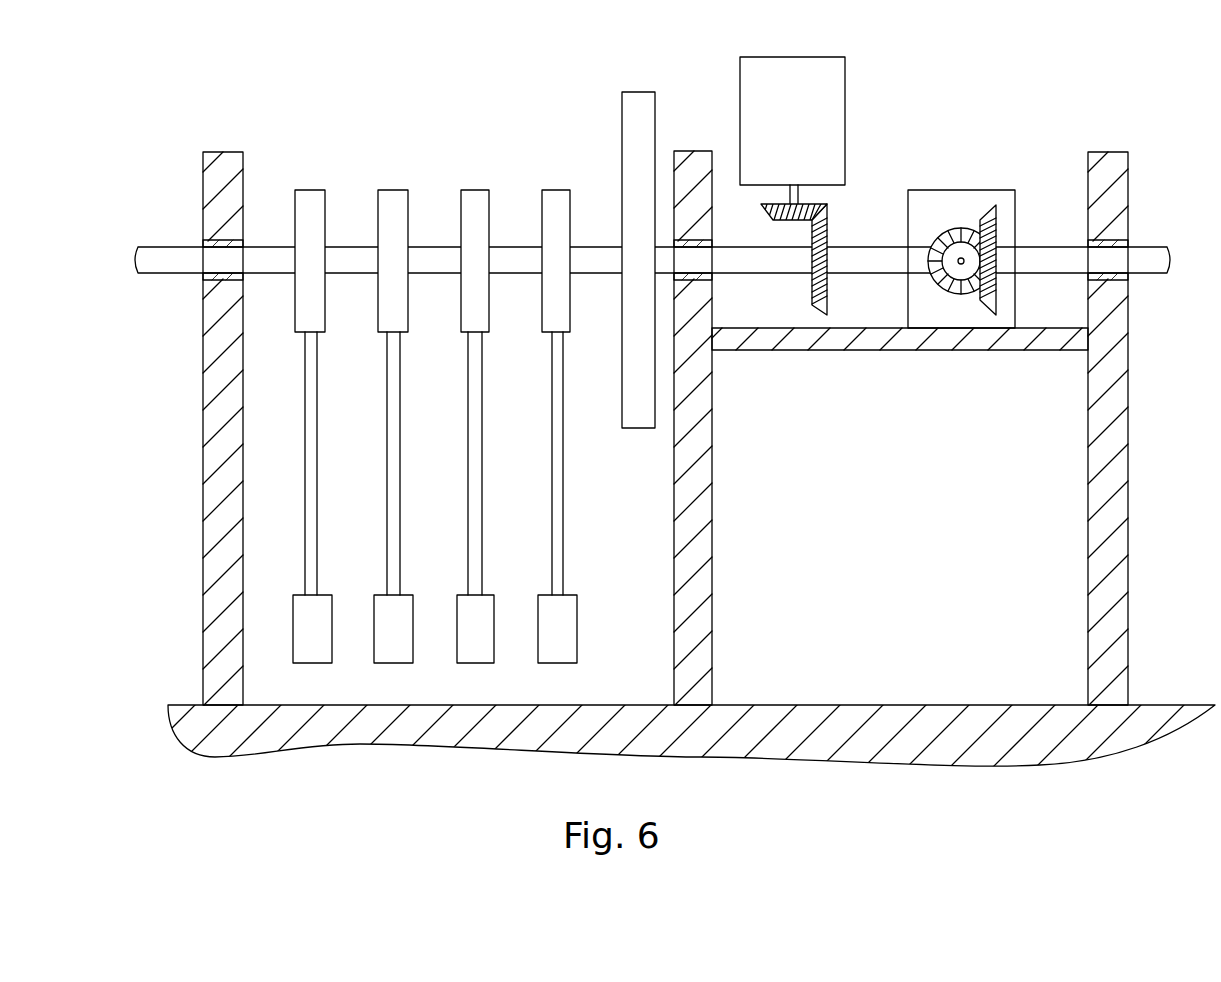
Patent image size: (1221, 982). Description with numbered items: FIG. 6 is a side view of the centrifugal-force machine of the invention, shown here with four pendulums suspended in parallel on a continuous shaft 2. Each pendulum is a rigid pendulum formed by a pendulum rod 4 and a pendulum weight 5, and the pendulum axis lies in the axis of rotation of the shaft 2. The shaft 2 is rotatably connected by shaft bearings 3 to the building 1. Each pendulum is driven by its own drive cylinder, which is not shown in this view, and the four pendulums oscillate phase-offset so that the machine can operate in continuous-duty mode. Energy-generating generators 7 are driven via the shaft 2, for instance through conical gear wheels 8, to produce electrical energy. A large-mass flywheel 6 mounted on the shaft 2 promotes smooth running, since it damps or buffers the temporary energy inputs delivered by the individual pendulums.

The building 1 is at (223, 357).
The shaft 2 is at (265, 253).
The shaft bearings 3 is at (218, 243).
The pendulum rod 4 is at (313, 446).
The pendulum weight 5 is at (320, 603).
The flywheel 6 is at (645, 125).
The generators 7 is at (826, 92).
The conical gear wheels 8 is at (812, 292).